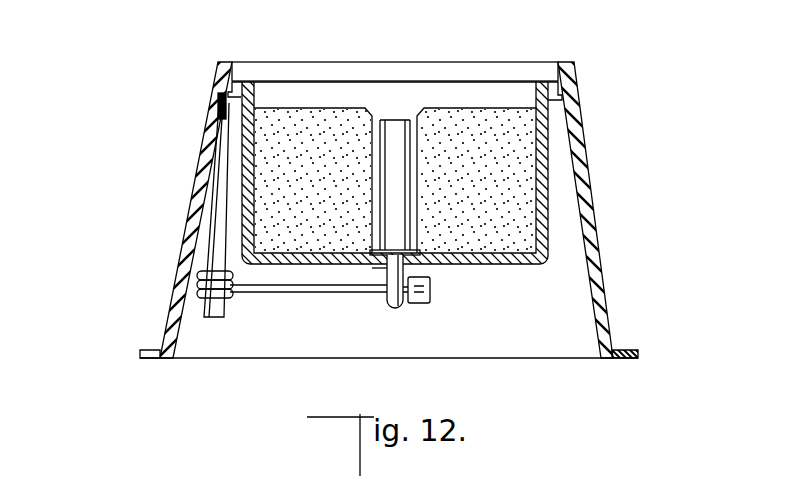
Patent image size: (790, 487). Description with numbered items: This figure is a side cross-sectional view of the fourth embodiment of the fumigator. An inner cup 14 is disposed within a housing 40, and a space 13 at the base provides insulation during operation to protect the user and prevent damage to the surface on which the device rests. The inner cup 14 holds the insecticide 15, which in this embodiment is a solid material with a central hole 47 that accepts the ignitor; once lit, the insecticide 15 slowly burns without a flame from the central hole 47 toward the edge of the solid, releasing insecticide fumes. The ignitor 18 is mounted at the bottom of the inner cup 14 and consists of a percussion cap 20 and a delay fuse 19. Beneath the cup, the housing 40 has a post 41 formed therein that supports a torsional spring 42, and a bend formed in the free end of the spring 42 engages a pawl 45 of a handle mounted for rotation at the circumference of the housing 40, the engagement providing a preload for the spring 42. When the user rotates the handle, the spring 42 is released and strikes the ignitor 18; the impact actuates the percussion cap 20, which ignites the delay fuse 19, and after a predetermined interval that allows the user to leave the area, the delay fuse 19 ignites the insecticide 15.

The space 13 is at (110, 322).
The inner cup 14 is at (545, 137).
The insecticide 15 is at (512, 177).
The ignitor 18 is at (485, 273).
The delay fuse 19 is at (412, 223).
The percussion cap 20 is at (403, 268).
The housing 40 is at (202, 148).
The post 41 is at (208, 317).
The torsional spring 42 is at (303, 293).
The pawl 45 is at (420, 303).
The central hole 47 is at (413, 108).